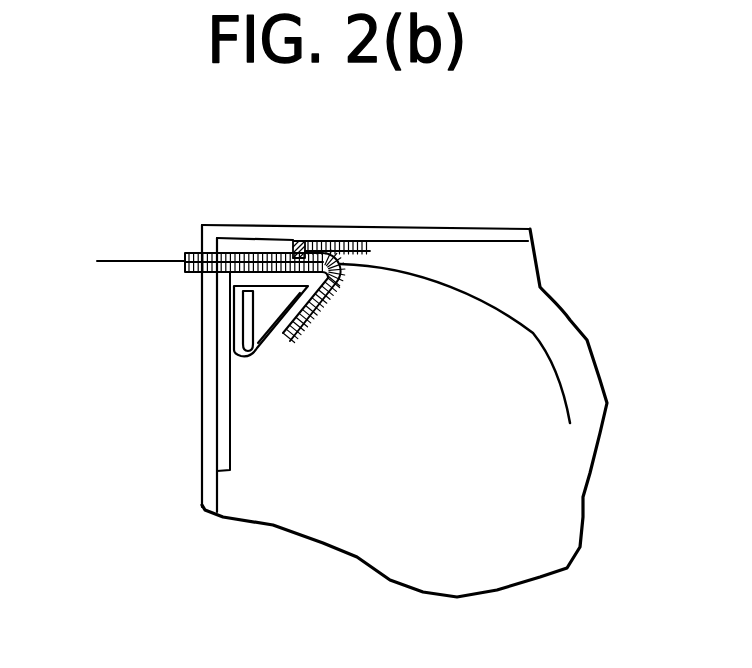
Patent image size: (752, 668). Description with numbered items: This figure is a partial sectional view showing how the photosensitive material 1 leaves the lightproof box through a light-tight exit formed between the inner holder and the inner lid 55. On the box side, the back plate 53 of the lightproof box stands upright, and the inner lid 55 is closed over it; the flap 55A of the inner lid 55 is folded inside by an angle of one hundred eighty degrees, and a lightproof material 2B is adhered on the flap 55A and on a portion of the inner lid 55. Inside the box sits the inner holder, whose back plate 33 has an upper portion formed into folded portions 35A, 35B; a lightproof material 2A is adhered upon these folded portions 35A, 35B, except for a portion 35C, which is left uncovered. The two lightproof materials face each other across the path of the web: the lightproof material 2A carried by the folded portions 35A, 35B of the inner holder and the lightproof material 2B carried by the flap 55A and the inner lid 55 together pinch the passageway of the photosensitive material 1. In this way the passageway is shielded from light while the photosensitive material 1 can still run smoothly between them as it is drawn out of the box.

The photosensitive material 1 is at (98, 188).
The lightproof material 2A is at (187, 275).
The lightproof material 2B is at (192, 252).
The back plate 33 is at (218, 465).
The folded portion 35A is at (262, 278).
The folded portion 35B is at (278, 336).
The portion 35C is at (242, 332).
The back plate 53 is at (208, 438).
The inner lid 55 is at (455, 227).
The flap 55A is at (250, 248).